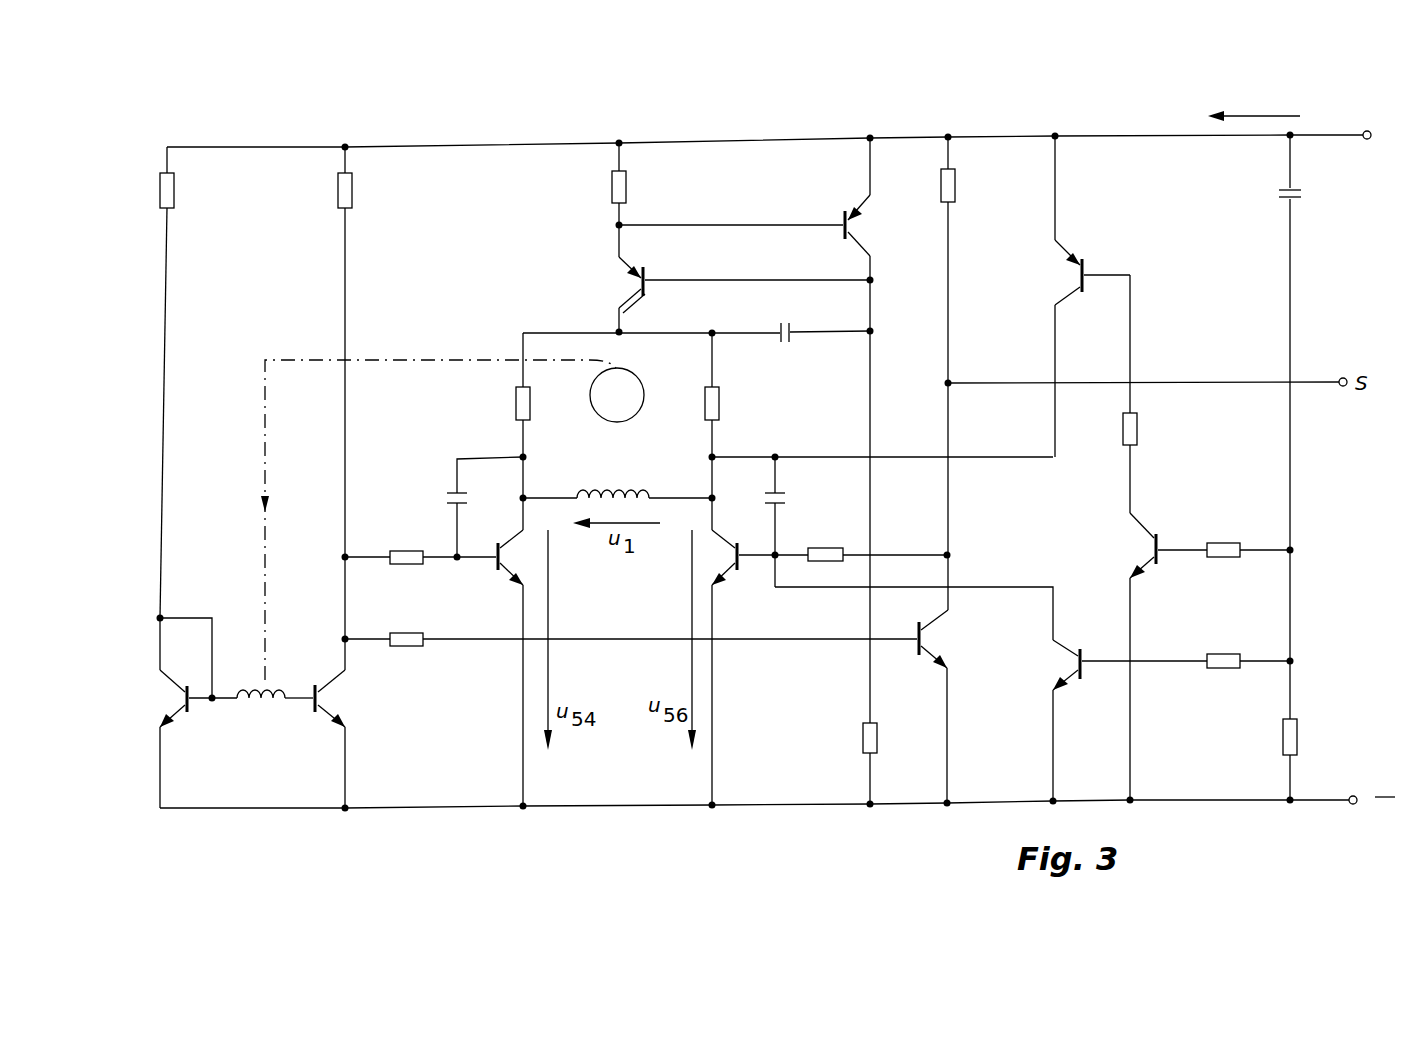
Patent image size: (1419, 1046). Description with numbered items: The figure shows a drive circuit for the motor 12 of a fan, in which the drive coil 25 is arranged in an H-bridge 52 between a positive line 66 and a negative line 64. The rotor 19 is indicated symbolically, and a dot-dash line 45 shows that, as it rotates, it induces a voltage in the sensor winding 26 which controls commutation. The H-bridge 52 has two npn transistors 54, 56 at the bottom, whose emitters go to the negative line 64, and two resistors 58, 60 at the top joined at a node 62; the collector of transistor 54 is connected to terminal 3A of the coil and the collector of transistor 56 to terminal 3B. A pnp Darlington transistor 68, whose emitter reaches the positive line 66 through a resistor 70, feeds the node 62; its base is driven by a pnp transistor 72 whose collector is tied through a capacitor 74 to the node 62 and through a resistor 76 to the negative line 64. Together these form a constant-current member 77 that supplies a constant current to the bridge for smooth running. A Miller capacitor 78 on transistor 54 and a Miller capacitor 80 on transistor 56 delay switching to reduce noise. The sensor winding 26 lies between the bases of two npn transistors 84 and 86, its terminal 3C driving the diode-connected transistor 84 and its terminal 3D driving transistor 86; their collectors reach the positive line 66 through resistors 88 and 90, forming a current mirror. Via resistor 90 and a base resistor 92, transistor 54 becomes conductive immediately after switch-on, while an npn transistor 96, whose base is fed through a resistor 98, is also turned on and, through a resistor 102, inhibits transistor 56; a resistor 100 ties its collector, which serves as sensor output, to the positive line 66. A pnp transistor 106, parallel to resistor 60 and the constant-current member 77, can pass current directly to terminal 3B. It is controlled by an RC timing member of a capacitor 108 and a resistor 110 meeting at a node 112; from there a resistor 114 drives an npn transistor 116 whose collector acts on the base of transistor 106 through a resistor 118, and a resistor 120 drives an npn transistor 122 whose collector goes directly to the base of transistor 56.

The positive line 66 is at (775, 141).
The negative line 64 is at (826, 806).
The resistor 88 is at (175, 192).
The resistor 90 is at (353, 192).
The npn transistor 84 is at (185, 700).
The npn transistor 86 is at (322, 700).
The sensor winding 26 is at (266, 704).
The terminal 3C is at (214, 695).
The terminal 3D is at (300, 696).
The base resistor 92 is at (410, 565).
The resistor 98 is at (418, 646).
The dot-dash line 45 is at (398, 360).
The rotor 19 is at (640, 380).
The motor 12 is at (572, 417).
The resistor 58 is at (516, 406).
The resistor 60 is at (720, 404).
The terminal 3A is at (528, 494).
The terminal 3B is at (707, 494).
The drive coil 25 is at (608, 494).
The H-bridge 52 is at (630, 616).
The Miller capacitor 78 is at (447, 497).
The npn transistor 54 is at (496, 566).
The npn transistor 56 is at (740, 566).
The node 62 is at (618, 331).
The capacitor 74 is at (780, 330).
The resistor 70 is at (627, 185).
The pnp Darlington transistor 68 is at (646, 274).
The pnp transistor 72 is at (850, 223).
The constant-current member 77 is at (778, 197).
The resistor 76 is at (862, 742).
The Miller capacitor 80 is at (786, 496).
The resistor 102 is at (826, 547).
The resistor 100 is at (956, 185).
The npn transistor 96 is at (924, 635).
The pnp transistor 106 is at (1078, 280).
The resistor 118 is at (1138, 430).
The npn transistor 116 is at (1154, 548).
The resistor 114 is at (1216, 542).
The node 112 is at (1293, 548).
The npn transistor 122 is at (1076, 668).
The resistor 120 is at (1216, 653).
The capacitor 108 is at (1294, 200).
The resistor 110 is at (1298, 737).